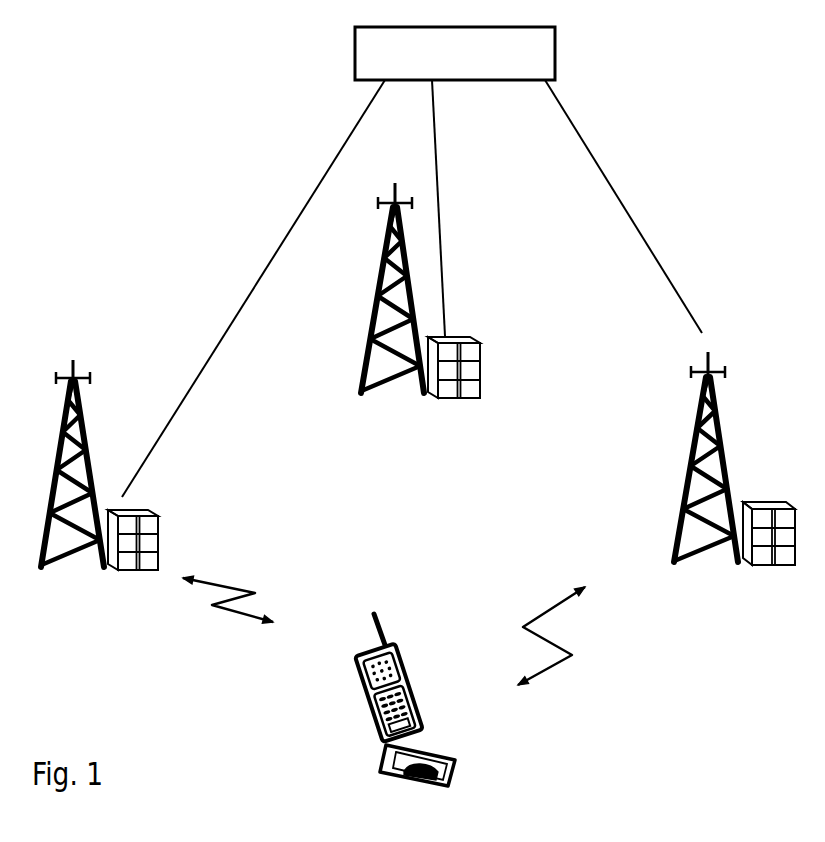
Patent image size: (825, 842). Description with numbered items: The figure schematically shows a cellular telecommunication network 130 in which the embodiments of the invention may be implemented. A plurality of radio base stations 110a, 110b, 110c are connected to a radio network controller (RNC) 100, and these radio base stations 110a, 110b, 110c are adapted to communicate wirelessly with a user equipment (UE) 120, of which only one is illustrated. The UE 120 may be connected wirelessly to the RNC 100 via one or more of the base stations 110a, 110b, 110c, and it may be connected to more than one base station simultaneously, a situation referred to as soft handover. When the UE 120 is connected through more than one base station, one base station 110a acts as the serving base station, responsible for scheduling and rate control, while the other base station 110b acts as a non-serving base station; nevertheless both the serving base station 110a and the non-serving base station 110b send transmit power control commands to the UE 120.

The radio network controller 100 is at (557, 79).
The radio base station 110a is at (121, 482).
The radio base station 110b is at (767, 493).
The radio base station 110c is at (482, 353).
The user equipment 120 is at (417, 700).
The cellular telecommunication network 130 is at (647, 206).